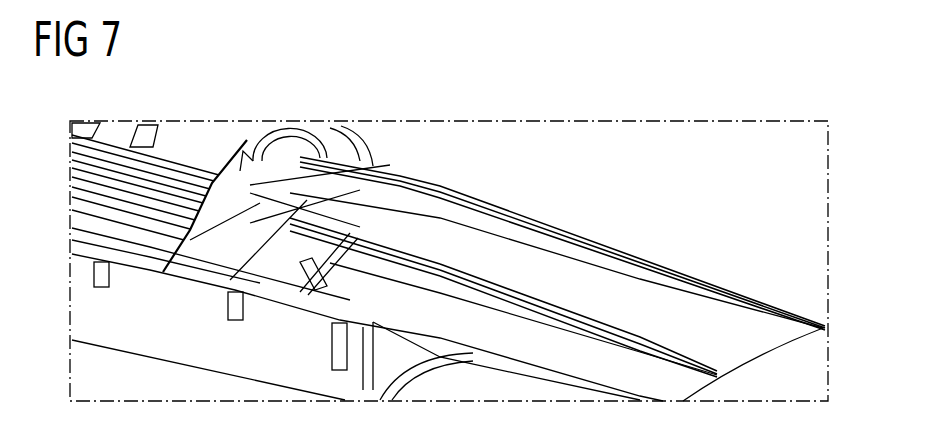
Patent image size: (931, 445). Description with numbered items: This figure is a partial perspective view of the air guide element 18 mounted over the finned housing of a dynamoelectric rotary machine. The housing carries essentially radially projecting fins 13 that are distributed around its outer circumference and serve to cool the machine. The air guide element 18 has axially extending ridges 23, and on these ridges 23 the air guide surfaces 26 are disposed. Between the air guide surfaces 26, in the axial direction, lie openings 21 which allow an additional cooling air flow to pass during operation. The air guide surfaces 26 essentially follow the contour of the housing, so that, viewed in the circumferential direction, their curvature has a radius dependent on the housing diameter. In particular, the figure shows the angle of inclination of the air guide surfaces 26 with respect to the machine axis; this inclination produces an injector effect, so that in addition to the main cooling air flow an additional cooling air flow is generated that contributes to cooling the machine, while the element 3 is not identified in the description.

The vehicle body / roof structure 3 is at (800, 373).
The fins 13 is at (113, 176).
The air guide surfaces 26 is at (182, 213).
The openings 21 is at (248, 143).
The air guide element 18 is at (383, 203).
The ridges 23 is at (504, 227).